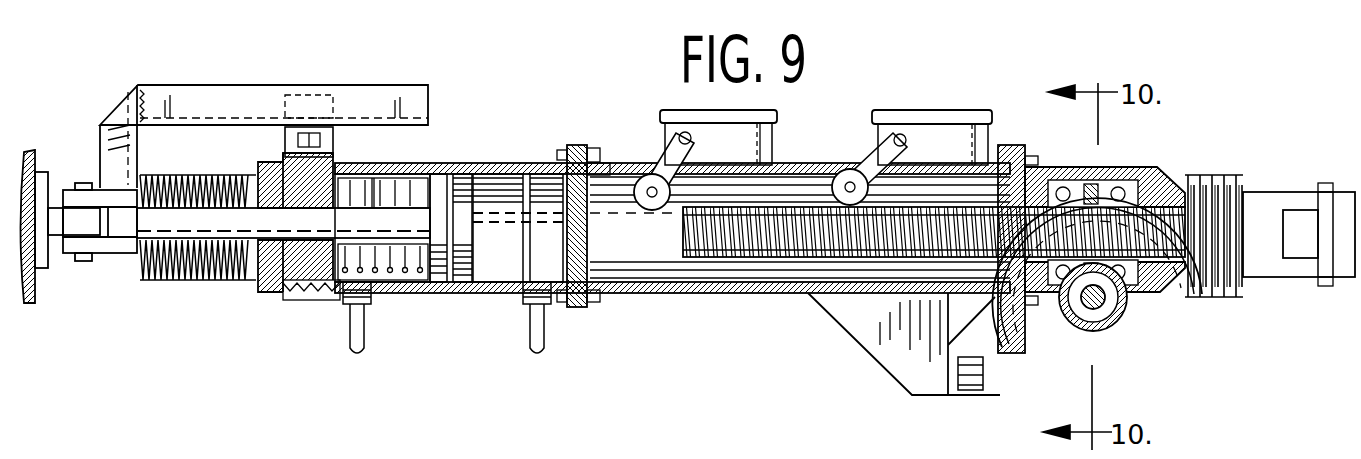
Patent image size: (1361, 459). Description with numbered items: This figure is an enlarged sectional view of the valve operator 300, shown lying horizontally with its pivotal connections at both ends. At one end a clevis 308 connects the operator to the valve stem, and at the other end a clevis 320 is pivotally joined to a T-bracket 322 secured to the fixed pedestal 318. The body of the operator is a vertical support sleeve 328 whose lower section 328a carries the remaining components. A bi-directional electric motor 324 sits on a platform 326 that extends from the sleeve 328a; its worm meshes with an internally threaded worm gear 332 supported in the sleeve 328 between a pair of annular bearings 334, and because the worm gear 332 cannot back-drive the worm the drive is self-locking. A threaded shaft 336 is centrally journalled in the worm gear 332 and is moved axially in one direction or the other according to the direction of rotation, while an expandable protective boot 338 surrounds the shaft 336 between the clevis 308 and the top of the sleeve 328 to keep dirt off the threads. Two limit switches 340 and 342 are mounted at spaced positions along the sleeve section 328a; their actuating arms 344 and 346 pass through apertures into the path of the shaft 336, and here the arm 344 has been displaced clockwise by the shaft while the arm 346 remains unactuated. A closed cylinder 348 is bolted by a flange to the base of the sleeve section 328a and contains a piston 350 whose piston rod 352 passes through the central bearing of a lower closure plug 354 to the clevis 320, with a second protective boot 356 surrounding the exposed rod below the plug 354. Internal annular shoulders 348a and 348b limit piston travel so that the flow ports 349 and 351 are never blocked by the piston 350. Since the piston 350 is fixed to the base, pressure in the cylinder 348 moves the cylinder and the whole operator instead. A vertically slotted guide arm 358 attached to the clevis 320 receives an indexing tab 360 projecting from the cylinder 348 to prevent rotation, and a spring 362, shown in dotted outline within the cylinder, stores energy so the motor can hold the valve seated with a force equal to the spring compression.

The valve operator 300 is at (665, 300).
The clevis 308 is at (1283, 190).
The pedestal 318 is at (38, 283).
The clevis 320 is at (93, 197).
The T-bracket 322 is at (43, 255).
The bi-directional electric motor 324 is at (1180, 330).
The platform 326 is at (875, 325).
The vertical support sleeve 328 is at (1063, 178).
The lower section of the support sleeve 328a is at (708, 293).
The worm gear 332 is at (1098, 183).
The annular bearings 334 is at (1140, 318).
The threaded shaft 336 is at (743, 262).
The protective boot 338 is at (1210, 178).
The limit switch 340 is at (955, 145).
The limit switch 342 is at (742, 138).
The actuating arm 344 is at (872, 166).
The actuating arm 346 is at (660, 176).
The closed cylinder 348 is at (493, 293).
The upper internal annular shoulder 348a is at (525, 172).
The lower internal annular shoulder 348b is at (385, 285).
The flow port 349 is at (372, 312).
The piston 350 is at (465, 250).
The flow port 351 is at (553, 312).
The piston rod 352 is at (300, 220).
The lower closure plug 354 is at (268, 292).
The protective boot 356 is at (160, 258).
The guide arm 358 is at (372, 100).
The indexing tab 360 is at (290, 142).
The spring 362 is at (412, 165).